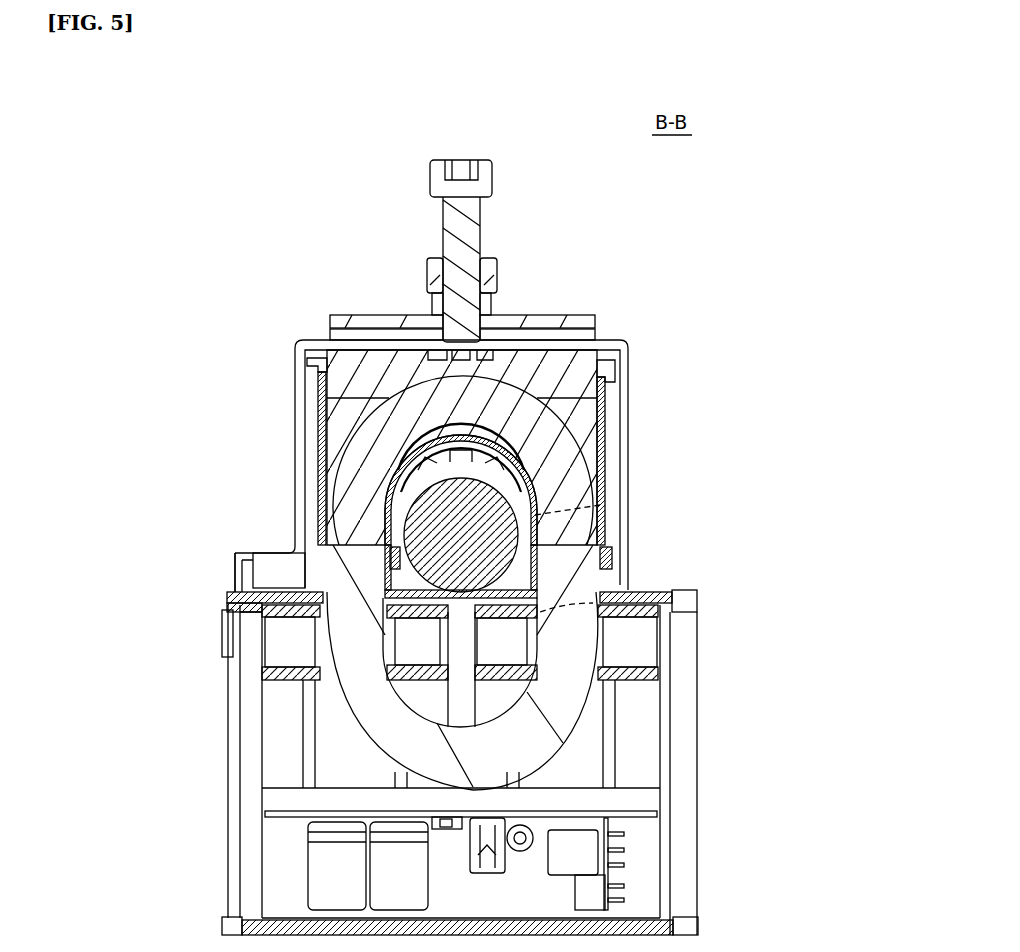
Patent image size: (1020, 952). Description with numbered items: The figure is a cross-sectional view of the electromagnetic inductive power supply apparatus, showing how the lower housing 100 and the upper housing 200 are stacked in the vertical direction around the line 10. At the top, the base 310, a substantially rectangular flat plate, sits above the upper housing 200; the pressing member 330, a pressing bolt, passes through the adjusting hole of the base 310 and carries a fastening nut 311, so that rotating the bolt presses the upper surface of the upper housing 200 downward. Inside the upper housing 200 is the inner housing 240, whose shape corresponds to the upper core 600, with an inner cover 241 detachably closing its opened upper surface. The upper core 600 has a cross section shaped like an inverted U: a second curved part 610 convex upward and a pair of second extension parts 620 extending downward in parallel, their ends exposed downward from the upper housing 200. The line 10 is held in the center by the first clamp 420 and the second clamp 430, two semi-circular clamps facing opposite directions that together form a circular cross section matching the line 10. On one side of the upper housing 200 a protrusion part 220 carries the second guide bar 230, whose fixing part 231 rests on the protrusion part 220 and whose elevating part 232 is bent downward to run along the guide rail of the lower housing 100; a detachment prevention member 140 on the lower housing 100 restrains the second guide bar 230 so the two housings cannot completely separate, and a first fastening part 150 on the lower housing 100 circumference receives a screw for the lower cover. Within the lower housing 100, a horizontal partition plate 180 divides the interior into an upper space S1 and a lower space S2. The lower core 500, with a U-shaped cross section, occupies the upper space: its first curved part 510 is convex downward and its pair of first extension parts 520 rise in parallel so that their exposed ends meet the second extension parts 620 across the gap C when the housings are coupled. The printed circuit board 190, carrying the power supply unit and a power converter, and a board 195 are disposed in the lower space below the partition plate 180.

The line 10 is at (435, 515).
The lower housing 100 is at (687, 627).
The detachment prevention member 140 is at (232, 632).
The first fastening part 150 is at (237, 688).
The partition plate 180 is at (320, 796).
The printed circuit board 190 is at (258, 604).
The printed circuit board 195 is at (623, 812).
The upper housing 200 is at (295, 343).
The protrusion part 220 is at (280, 570).
The second guide bar 230 is at (157, 535).
The fixing part 231 is at (240, 568).
The elevating part 232 is at (232, 580).
The inner housing 240 is at (322, 404).
The inner cover 241 is at (348, 377).
The base 310 is at (568, 320).
The fastening nut 311 is at (490, 273).
The pressing member 330 is at (462, 213).
The first clamp 420 is at (455, 432).
The second clamp 430 is at (420, 487).
The lower core 500 is at (579, 667).
The first curved part 510 is at (503, 747).
The first extension part 520 is at (570, 623).
The upper core 600 is at (684, 441).
The second curved part 610 is at (603, 378).
The second extension part 620 is at (606, 462).
The gap C is at (612, 530).
The first space S1 is at (287, 729).
The second space S2 is at (287, 855).